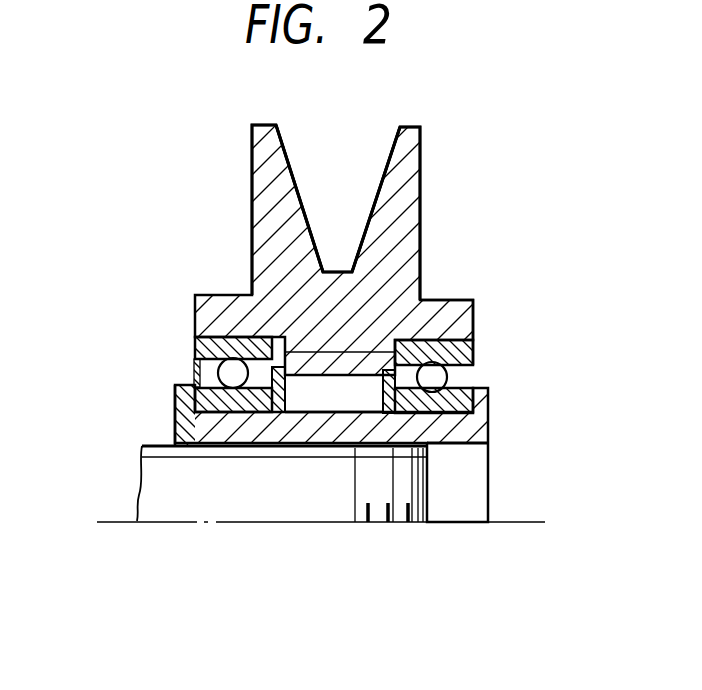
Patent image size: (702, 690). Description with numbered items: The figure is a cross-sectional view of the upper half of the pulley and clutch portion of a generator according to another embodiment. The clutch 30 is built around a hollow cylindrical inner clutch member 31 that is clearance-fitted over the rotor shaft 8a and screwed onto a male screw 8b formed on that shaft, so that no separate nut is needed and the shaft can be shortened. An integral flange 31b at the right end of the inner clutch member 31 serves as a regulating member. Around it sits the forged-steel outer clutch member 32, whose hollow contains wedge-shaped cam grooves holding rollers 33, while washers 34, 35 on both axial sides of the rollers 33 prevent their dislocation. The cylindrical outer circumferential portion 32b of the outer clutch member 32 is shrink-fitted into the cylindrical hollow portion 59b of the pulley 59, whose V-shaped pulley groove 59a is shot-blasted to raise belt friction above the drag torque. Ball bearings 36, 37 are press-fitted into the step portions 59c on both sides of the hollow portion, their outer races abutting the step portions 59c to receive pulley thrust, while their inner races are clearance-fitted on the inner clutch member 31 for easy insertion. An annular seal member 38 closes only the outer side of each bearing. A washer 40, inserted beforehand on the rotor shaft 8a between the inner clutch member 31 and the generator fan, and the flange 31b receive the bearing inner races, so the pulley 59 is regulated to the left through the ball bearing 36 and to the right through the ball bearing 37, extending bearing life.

The pulley 59 is at (410, 127).
The pulley groove 59a is at (402, 148).
The cylindrical hollow portion 59b is at (352, 340).
The step portion 59c is at (472, 305).
The outer clutch member 32 is at (338, 347).
The cylindrical outer circumferential portion 32b is at (300, 400).
The roller 33 is at (360, 350).
The ball bearing 36 is at (218, 408).
The ball bearing 37 is at (447, 403).
The annular seal member 38 is at (194, 368).
The washer 34 is at (263, 405).
The washer 35 is at (388, 410).
The inner clutch member 31 is at (489, 417).
The flange 31b is at (339, 400).
The washer 40 is at (177, 392).
The clutch 30 is at (485, 433).
The rotor shaft 8a is at (155, 508).
The male screw 8b is at (398, 437).